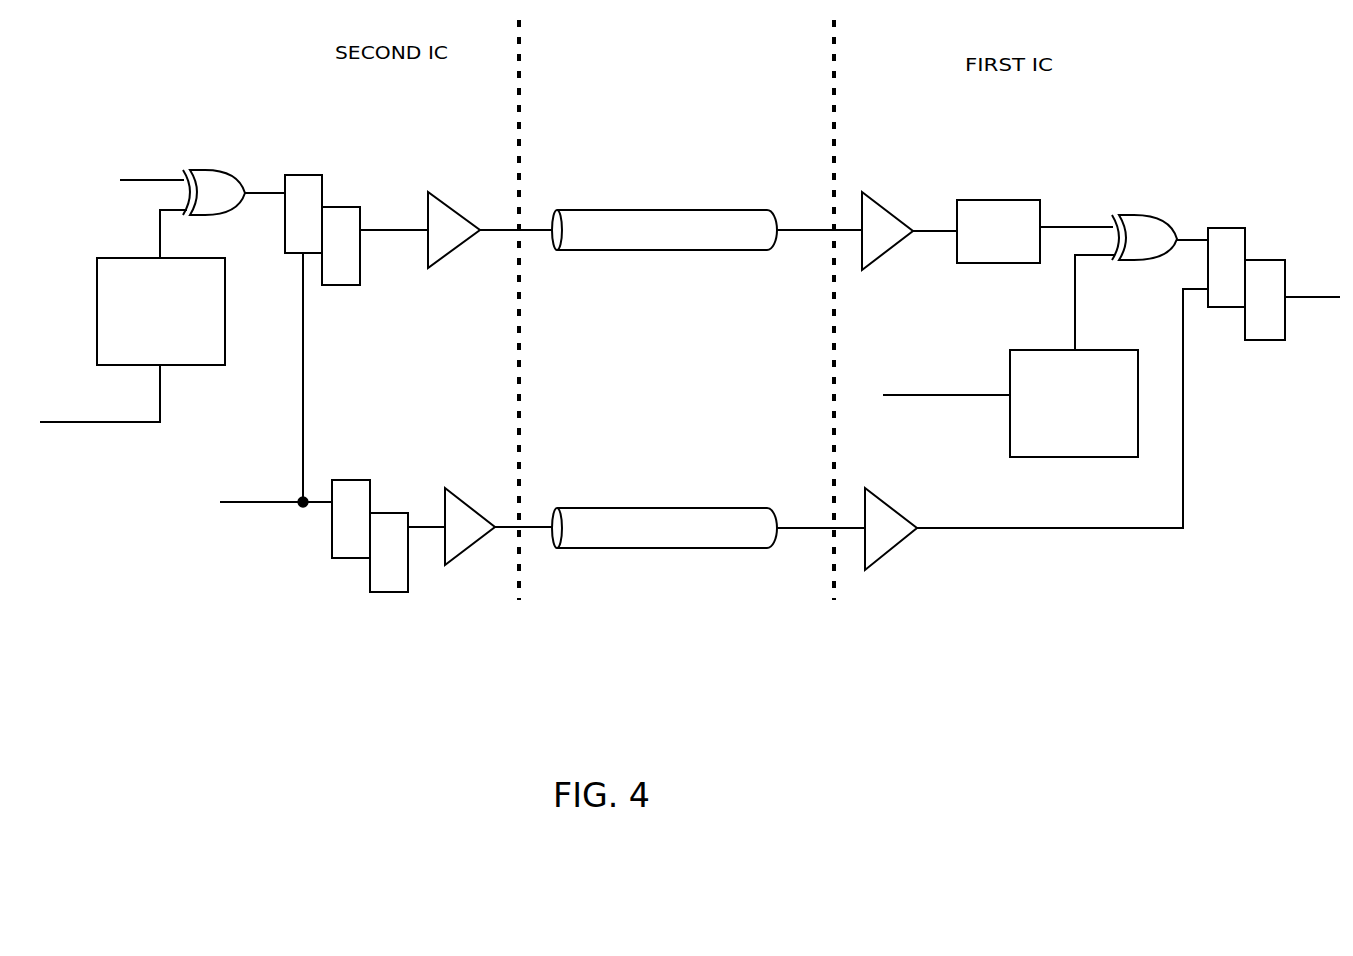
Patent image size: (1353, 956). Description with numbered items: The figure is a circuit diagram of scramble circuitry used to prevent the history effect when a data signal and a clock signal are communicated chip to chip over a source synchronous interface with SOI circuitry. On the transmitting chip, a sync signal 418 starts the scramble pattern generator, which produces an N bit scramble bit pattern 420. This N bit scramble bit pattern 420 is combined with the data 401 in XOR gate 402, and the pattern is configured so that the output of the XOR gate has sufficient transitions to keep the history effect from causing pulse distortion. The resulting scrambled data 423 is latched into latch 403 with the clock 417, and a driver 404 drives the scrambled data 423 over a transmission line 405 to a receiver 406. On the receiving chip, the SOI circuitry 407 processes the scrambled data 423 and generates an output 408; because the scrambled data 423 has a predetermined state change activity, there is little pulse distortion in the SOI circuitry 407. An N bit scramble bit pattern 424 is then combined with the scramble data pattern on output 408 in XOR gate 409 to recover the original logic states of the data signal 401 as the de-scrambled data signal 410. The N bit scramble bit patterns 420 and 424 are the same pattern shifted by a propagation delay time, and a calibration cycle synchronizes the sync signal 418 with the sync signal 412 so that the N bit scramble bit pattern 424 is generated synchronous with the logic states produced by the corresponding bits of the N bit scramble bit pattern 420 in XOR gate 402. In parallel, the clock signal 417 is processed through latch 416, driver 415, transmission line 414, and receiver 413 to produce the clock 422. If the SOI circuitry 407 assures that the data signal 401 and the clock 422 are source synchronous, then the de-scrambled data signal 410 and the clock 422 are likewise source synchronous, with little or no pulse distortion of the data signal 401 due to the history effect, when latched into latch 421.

The data signal 401 is at (168, 173).
The XOR gate 402 is at (222, 185).
The latch 403 is at (313, 198).
The driver 404 is at (438, 217).
The transmission line 405 is at (647, 232).
The receiver 406 is at (882, 222).
The SOI circuitry 407 is at (977, 208).
The output 408 is at (1065, 225).
The XOR gate 409 is at (1140, 230).
The de-scrambled data signal 410 is at (1180, 240).
The sync signal 412 is at (958, 362).
The receiver 413 is at (890, 527).
The transmission line 414 is at (645, 535).
The driver 415 is at (465, 518).
The latch 416 is at (343, 495).
The clock 417 is at (258, 463).
The sync signal 418 is at (92, 420).
The N bit scramble bit pattern 420 is at (160, 235).
The latch 421 is at (1263, 268).
The clock 422 is at (1185, 448).
The scrambled data 423 is at (380, 232).
The N bit scramble bit pattern 424 is at (1075, 272).